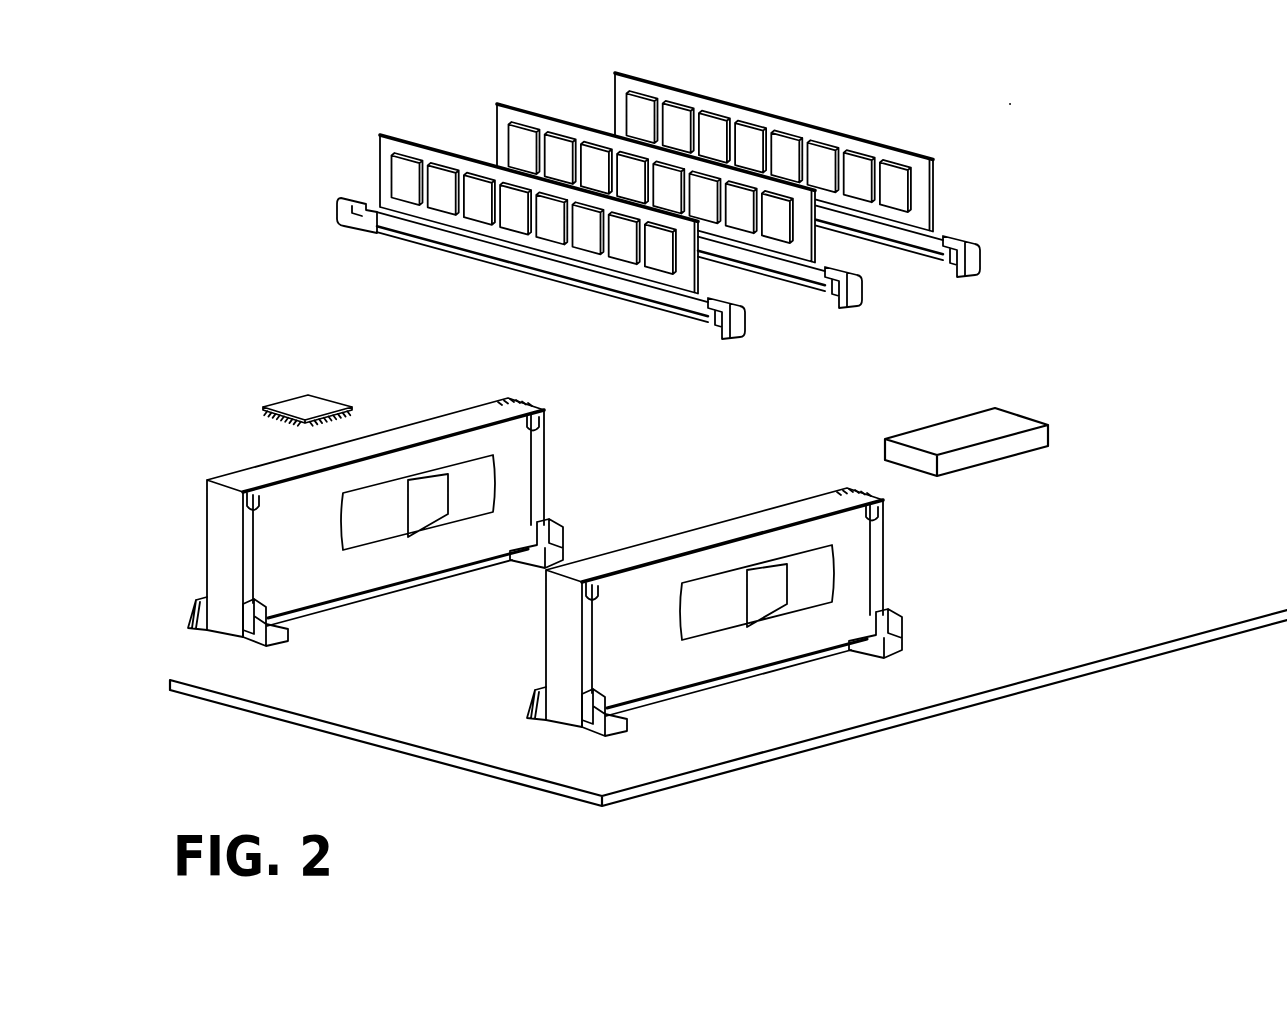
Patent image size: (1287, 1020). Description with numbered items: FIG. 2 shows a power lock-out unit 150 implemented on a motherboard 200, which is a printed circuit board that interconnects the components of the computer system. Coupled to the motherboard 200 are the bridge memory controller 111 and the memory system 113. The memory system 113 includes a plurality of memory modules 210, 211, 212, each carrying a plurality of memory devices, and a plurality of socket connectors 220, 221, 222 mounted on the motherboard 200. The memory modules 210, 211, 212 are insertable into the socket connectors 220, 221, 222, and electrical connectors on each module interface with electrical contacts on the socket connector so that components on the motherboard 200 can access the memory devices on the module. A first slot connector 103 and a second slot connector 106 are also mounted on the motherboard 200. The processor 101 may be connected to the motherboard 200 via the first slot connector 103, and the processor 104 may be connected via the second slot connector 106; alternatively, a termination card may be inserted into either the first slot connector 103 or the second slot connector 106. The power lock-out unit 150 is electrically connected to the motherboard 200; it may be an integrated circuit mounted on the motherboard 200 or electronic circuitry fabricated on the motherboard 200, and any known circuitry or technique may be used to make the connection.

The memory system 113 is at (1012, 105).
The memory module 210 is at (382, 172).
The memory module 211 is at (631, 183).
The memory module 212 is at (748, 152).
The socket connector 220 is at (660, 309).
The socket connector 221 is at (690, 317).
The socket connector 222 is at (898, 254).
The processor 104 is at (405, 506).
The second slot connector 106 is at (543, 468).
The processor 101 is at (743, 597).
The first slot connector 103 is at (904, 619).
The bridge memory controller 111 is at (323, 403).
The power lock-out unit 150 is at (1020, 420).
The motherboard 200 is at (1097, 660).